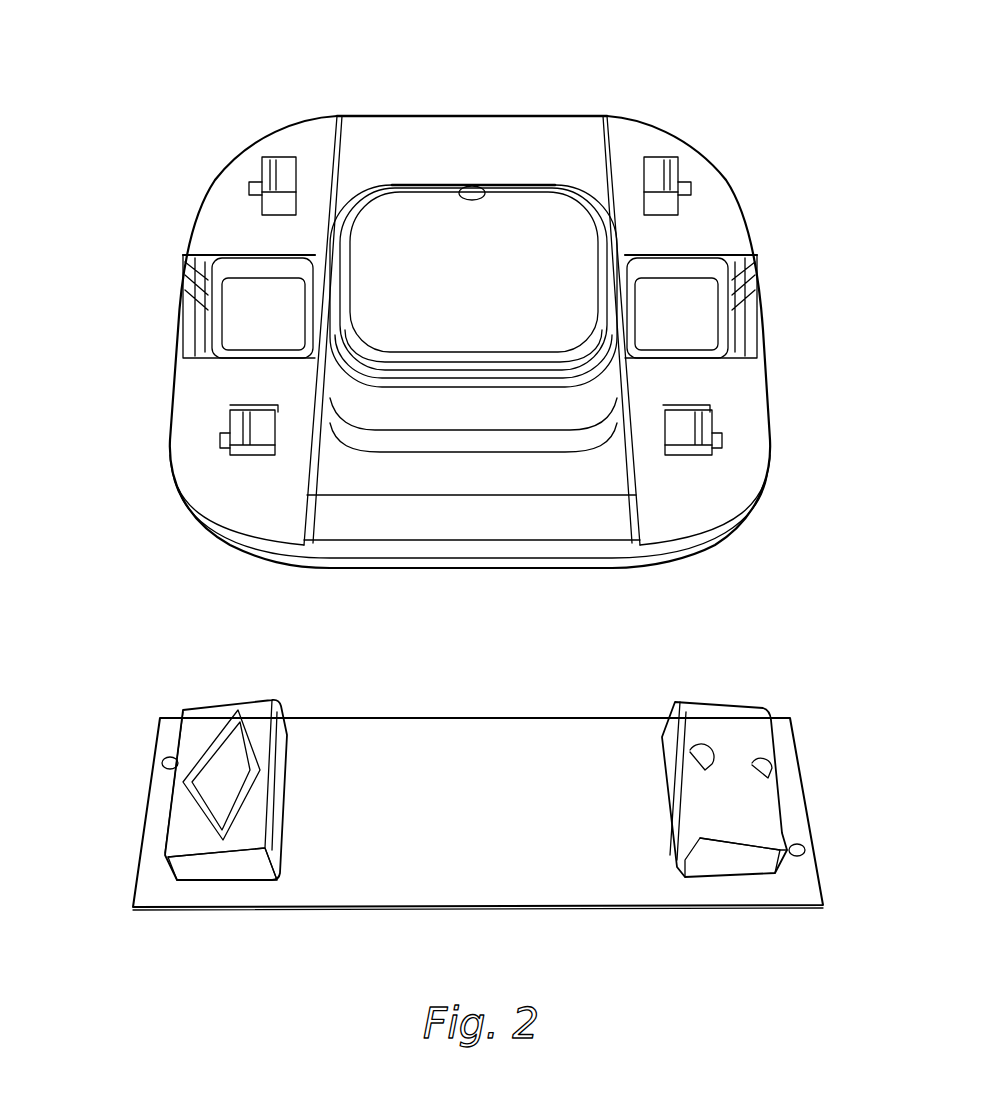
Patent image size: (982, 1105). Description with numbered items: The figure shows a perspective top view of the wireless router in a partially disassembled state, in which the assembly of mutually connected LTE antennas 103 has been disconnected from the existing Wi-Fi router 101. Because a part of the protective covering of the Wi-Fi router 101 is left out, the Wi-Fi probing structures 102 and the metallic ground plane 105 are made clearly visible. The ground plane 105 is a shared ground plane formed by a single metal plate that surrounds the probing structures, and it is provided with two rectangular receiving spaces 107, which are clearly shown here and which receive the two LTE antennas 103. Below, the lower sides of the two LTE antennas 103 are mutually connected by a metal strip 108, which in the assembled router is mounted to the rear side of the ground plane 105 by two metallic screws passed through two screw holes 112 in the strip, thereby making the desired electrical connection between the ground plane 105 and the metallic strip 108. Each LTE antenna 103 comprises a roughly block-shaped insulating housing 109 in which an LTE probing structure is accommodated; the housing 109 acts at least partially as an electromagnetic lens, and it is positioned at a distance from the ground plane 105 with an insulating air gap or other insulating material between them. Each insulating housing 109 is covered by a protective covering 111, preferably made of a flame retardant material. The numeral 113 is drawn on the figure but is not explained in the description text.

The Wi-Fi router 101 is at (268, 104).
The Wi-Fi antenna 102 is at (263, 163).
The LTE antenna 103 is at (210, 692).
The ground plane 105 is at (245, 493).
The receiving space 107 is at (250, 320).
The metal strip 108 is at (463, 760).
The insulating housing 109 is at (215, 863).
The protective covering 111 is at (755, 815).
The screw hole 112 is at (225, 757).
The front face 113 is at (187, 830).